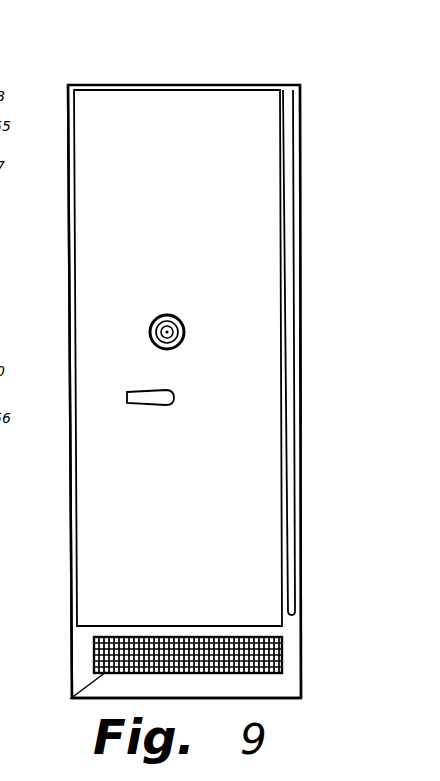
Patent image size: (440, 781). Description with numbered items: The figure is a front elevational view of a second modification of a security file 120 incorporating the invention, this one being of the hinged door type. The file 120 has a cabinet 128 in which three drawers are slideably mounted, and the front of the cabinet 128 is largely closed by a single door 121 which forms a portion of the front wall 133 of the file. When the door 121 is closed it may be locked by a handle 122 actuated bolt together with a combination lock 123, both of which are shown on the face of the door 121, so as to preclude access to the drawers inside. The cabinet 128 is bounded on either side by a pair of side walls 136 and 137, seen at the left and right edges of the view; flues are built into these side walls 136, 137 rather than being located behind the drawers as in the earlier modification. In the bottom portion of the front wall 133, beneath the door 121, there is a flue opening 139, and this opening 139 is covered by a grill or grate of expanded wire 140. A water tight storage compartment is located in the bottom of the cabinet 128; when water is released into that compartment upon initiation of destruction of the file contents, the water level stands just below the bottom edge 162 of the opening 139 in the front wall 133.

The file 120 is at (83, 71).
The door 121 is at (184, 184).
The handle 122 is at (160, 392).
The combination lock 123 is at (183, 323).
The cabinet 128 is at (305, 112).
The front wall 133 is at (215, 686).
The side wall 136 is at (69, 276).
The side wall 137 is at (301, 287).
The flue opening 139 is at (283, 649).
The grill or grate of expanded wire 140 is at (93, 648).
The bottom edge 162 is at (70, 698).